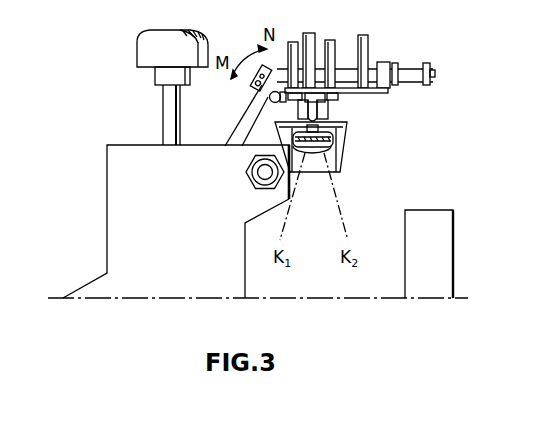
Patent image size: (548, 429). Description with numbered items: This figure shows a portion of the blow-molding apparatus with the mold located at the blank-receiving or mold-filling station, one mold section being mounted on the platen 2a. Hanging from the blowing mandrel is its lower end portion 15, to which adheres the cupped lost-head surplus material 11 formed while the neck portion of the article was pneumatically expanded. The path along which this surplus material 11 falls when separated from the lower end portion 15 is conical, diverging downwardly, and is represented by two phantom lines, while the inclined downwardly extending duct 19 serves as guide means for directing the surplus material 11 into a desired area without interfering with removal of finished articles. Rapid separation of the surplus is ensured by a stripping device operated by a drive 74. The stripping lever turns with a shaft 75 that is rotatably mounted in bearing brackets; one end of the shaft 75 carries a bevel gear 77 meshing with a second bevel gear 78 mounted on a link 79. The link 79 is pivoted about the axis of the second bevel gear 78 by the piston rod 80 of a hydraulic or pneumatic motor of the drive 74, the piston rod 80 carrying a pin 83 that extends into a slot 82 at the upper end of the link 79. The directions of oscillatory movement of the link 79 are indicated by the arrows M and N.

The platen 2a is at (197, 269).
The surplus material 11 is at (332, 137).
The lower end portion of the blowing mandrel 15 is at (313, 107).
The duct 19 is at (427, 257).
The drive 74 is at (392, 61).
The shaft 75 is at (338, 96).
The bevel gear 77 is at (242, 146).
The second bevel gear 78 is at (225, 146).
The link 79 is at (261, 96).
The piston rod 80 is at (277, 73).
The slot 82 is at (255, 72).
The pin 83 is at (258, 90).